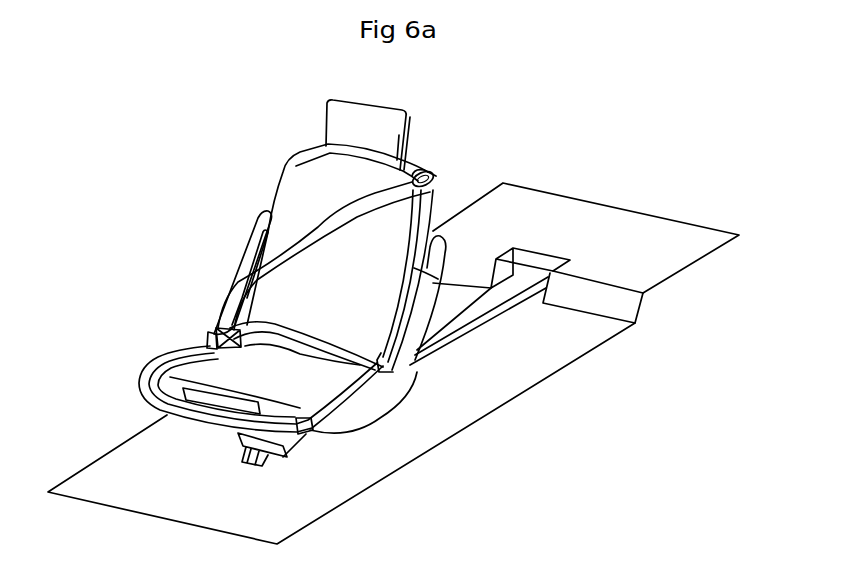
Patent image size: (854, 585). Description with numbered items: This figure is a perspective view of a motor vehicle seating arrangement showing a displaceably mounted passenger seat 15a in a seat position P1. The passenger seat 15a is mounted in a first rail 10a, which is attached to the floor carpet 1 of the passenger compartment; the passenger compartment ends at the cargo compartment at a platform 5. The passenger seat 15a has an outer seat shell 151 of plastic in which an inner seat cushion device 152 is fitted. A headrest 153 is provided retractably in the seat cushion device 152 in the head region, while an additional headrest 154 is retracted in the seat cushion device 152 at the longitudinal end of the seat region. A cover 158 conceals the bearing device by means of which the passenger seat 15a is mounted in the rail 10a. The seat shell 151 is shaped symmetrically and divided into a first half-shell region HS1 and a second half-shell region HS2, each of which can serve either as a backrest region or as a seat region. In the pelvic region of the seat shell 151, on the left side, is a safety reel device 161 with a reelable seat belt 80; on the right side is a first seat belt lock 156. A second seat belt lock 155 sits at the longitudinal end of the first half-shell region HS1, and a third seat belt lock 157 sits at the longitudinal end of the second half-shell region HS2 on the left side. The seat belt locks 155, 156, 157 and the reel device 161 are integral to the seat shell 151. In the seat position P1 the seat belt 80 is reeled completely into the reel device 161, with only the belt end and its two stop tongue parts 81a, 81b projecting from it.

The floor carpet 1 is at (394, 456).
The platform 5 is at (625, 222).
The first rail 10a is at (476, 323).
The passenger seat 15a is at (243, 235).
The seat belt 80 is at (237, 302).
The stop tongue part 81a is at (213, 328).
The stop tongue part 81b is at (434, 181).
The outer seat shell 151 is at (240, 264).
The inner seat cushion device 152 is at (290, 191).
The headrest 153 is at (338, 129).
The additional headrest 154 is at (210, 402).
The second seat belt lock 155 is at (306, 437).
The first seat belt lock 156 is at (208, 341).
The third seat belt lock 157 is at (421, 176).
The cover 158 is at (283, 456).
The safety reel device 161 is at (385, 368).
The seat position P1 is at (172, 144).
The first half-shell region HS1 is at (128, 366).
The second half-shell region HS2 is at (200, 267).